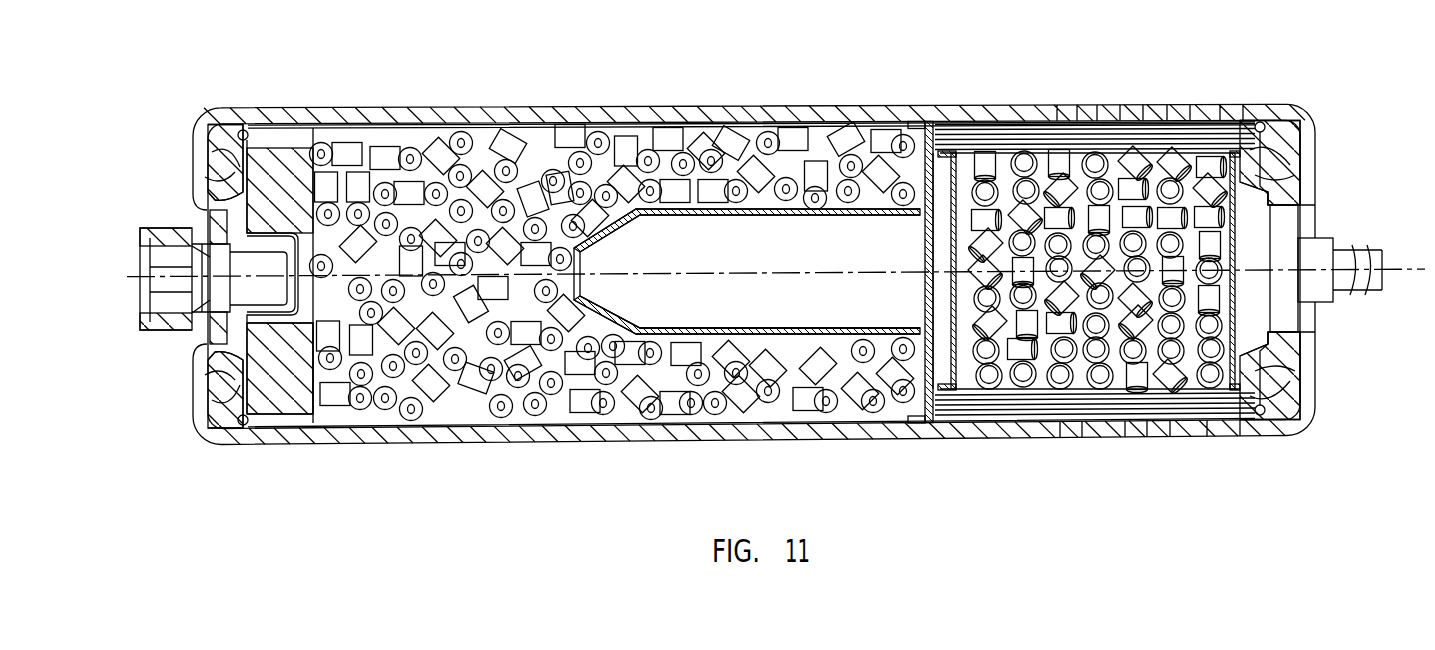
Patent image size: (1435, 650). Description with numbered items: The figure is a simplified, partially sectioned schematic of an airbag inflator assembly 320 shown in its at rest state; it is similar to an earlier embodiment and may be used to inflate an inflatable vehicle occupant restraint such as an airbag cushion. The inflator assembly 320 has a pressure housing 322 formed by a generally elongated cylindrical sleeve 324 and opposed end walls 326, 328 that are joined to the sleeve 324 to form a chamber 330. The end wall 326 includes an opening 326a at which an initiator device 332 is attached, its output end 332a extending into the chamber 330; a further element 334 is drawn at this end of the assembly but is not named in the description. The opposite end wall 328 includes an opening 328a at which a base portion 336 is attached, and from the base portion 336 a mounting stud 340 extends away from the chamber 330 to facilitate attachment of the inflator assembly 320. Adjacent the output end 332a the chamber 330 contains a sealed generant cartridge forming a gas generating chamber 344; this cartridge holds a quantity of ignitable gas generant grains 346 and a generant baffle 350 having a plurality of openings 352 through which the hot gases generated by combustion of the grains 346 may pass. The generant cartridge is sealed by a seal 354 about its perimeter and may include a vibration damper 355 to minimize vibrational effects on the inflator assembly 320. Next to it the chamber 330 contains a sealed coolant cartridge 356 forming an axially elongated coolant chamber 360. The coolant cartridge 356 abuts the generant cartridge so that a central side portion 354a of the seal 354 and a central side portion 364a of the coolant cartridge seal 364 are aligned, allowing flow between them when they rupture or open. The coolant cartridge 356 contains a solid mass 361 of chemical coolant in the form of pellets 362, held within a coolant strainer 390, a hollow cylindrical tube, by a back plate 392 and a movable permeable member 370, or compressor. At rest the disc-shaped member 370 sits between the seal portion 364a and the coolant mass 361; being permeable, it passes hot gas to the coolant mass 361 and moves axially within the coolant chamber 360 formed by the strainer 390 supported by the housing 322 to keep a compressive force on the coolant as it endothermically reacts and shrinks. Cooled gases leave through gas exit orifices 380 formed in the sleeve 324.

The inflator assembly 320 is at (776, 78).
The pressure housing 322 is at (399, 103).
The pressure housing sleeve 324 is at (541, 108).
The end wall 326 is at (193, 173).
The opening 326a is at (197, 338).
The end wall 328 is at (1315, 192).
The opening 328a is at (1315, 322).
The chamber 330 is at (233, 355).
The initiator device 332 is at (268, 257).
The output end 332a is at (290, 392).
The inlet fitting 334 is at (168, 228).
The base portion 336 is at (1324, 297).
The mounting stud 340 is at (1376, 250).
The gas generating chamber 344 is at (505, 353).
The gas generant grains 346 is at (664, 390).
The generant baffle 350 is at (728, 329).
The openings 352 is at (641, 312).
The seal 354 is at (275, 232).
The central side portion 354a is at (925, 283).
The vibration damper 355 is at (273, 395).
The sealed coolant cartridge 356 is at (1247, 108).
The coolant chamber 360 is at (967, 380).
The solid mass 361 is at (1120, 378).
The pellets 362 is at (1017, 160).
The coolant cartridge seal 364 is at (925, 108).
The central side portion 364a is at (935, 385).
The movable permeable member 370 is at (887, 130).
The gas exit orifices 380 is at (1110, 108).
The coolant strainer 390 is at (1021, 410).
The back plate 392 is at (1244, 423).